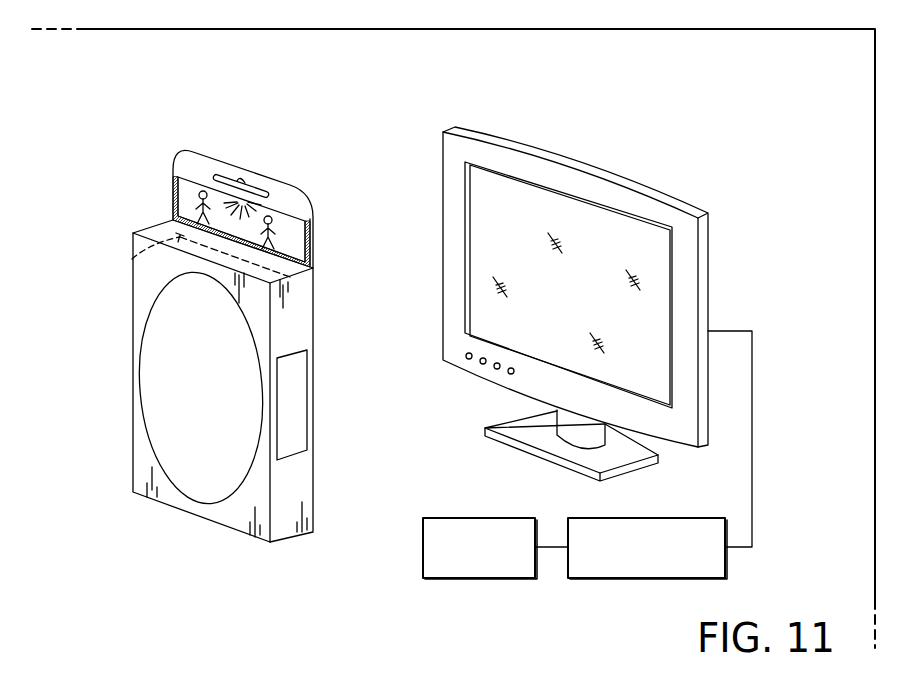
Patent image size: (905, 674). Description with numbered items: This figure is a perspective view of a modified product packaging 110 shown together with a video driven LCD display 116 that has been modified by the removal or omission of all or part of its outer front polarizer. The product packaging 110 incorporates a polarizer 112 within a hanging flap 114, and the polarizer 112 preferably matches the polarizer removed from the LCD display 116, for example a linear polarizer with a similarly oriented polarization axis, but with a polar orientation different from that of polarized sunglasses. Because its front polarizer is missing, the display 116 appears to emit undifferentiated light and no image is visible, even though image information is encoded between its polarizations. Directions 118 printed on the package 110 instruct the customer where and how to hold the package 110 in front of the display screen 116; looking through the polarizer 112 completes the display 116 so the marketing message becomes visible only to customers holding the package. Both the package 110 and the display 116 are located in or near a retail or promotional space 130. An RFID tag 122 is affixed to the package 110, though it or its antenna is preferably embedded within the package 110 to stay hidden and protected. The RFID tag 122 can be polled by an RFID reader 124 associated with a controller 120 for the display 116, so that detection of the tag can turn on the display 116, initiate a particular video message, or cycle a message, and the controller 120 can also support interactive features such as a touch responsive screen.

The product packaging 110 is at (133, 339).
The polarizer 112 is at (292, 243).
The hanging flap 114 is at (190, 161).
The LCD display 116 is at (488, 233).
The directions 118 is at (132, 259).
The controller 120 is at (648, 517).
The RFID tag 122 is at (292, 402).
The RFID reader 124 is at (478, 517).
The retail or promotional space 130 is at (720, 103).